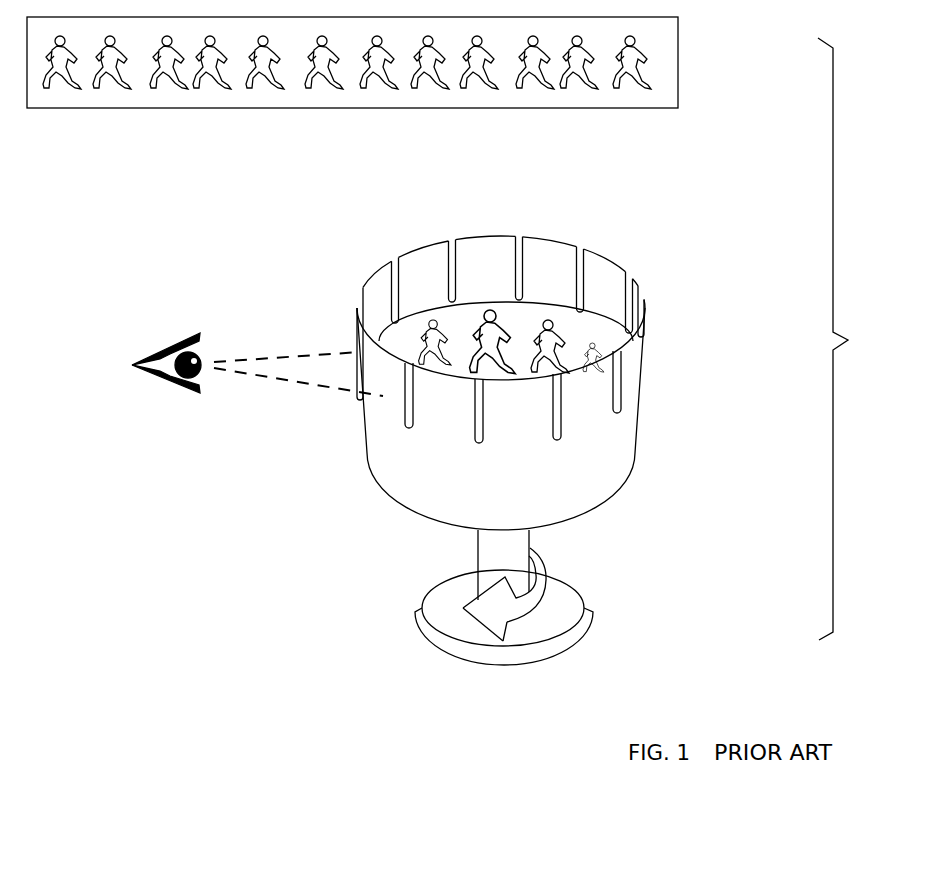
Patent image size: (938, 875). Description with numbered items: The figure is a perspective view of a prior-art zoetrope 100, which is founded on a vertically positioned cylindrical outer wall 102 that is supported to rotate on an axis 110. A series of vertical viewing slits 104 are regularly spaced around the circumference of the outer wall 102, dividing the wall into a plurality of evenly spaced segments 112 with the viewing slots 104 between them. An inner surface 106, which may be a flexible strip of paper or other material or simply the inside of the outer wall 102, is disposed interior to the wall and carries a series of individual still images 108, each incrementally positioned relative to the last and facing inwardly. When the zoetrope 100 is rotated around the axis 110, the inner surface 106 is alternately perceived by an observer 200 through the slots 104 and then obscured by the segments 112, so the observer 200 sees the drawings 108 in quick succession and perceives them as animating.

The zoetrope 100 is at (553, 431).
The cylindrical outer wall 102 is at (571, 383).
The vertical viewing slits 104 is at (563, 425).
The inner surface 106 is at (678, 60).
The still images 108 is at (393, 90).
The axis 110 is at (478, 551).
The segments 112 is at (593, 399).
The observer 200 is at (172, 352).